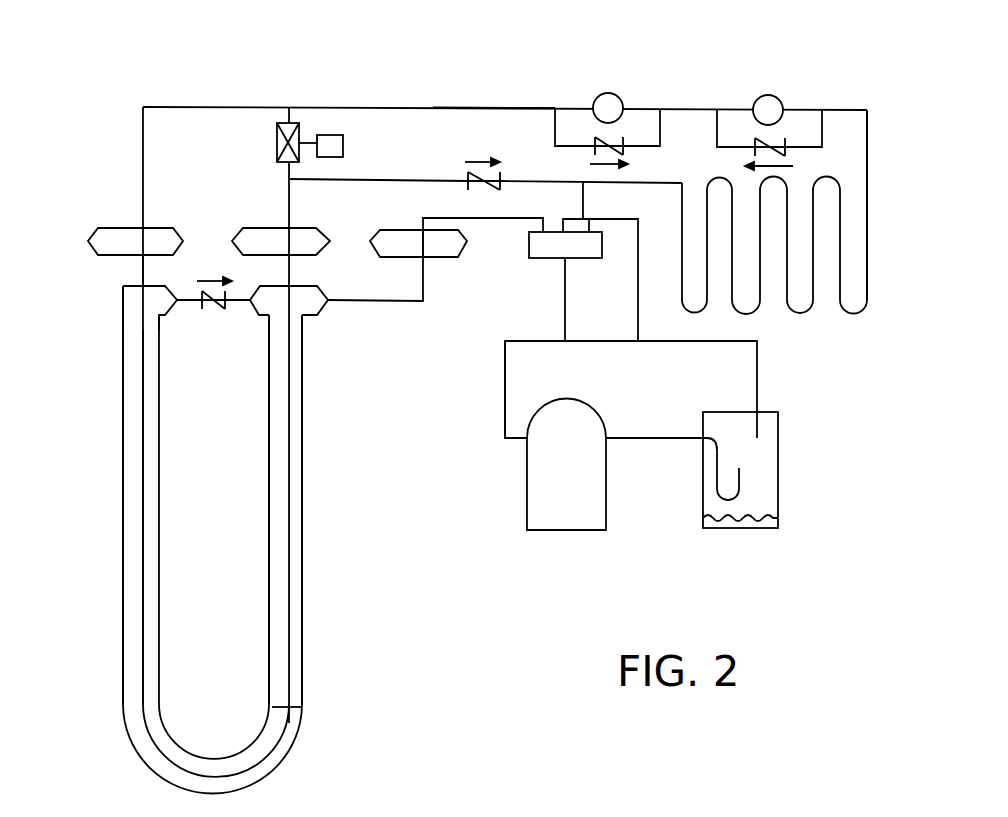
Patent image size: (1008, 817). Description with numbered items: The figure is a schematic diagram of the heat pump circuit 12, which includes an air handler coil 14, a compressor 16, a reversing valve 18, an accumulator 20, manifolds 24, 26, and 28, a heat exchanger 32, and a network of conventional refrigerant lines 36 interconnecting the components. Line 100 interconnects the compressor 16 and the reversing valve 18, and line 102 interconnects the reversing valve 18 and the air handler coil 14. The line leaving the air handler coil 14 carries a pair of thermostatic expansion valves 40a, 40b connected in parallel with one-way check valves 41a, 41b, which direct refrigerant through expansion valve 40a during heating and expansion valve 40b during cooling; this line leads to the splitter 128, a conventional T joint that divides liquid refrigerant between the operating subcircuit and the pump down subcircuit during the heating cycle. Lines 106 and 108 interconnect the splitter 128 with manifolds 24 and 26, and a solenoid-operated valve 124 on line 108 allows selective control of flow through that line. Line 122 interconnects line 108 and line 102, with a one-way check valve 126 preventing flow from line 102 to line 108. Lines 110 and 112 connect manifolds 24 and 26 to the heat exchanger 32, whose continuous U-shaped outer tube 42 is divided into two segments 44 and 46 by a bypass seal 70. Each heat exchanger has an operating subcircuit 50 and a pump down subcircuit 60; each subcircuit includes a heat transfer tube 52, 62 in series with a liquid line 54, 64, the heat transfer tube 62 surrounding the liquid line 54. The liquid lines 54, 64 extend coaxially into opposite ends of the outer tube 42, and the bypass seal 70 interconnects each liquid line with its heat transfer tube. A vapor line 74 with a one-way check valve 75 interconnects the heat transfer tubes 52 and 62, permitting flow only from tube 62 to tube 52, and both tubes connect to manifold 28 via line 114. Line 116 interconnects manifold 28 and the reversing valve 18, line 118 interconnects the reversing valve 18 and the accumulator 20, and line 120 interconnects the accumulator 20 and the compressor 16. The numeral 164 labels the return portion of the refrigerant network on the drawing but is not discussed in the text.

The heat pump circuit 12 is at (903, 165).
The air handler coil 14 is at (875, 248).
The compressor 16 is at (577, 540).
The reversing valve 18 is at (539, 268).
The accumulator 20 is at (789, 468).
The manifold 24 is at (118, 228).
The manifold 26 is at (262, 228).
The manifold 28 is at (392, 230).
The heat exchanger 32 is at (400, 562).
The refrigerant lines 36 is at (197, 96).
The thermostatic expansion valve 40a is at (615, 96).
The thermostatic expansion valve 40b is at (776, 97).
The one-way check valve 41a is at (625, 150).
The one-way check valve 41b is at (786, 150).
The outer tube 42 is at (123, 692).
The segment 44 is at (137, 623).
The segment 46 is at (302, 670).
The operating subcircuit 50 is at (312, 444).
The heat transfer tube 52 is at (302, 508).
The liquid line 54 is at (143, 527).
The pump down subcircuit 60 is at (113, 408).
The heat transfer tube 62 is at (123, 470).
The liquid line 64 is at (289, 599).
The bypass seal 70 is at (303, 708).
The vapor line 74 is at (168, 316).
The one-way check valve 75 is at (222, 306).
The line 100 is at (505, 388).
The line 102 is at (665, 182).
The line 106 is at (143, 134).
The line 108 is at (289, 190).
The line 110 is at (138, 272).
The line 112 is at (313, 286).
The line 114 is at (365, 302).
The line 116 is at (487, 219).
The line 118 is at (757, 355).
The line 120 is at (618, 438).
The line 122 is at (368, 180).
The solenoid-operated valve 124 is at (300, 128).
The one-way check valve 126 is at (498, 172).
The splitter 128 is at (289, 122).
The return line 164 is at (433, 107).